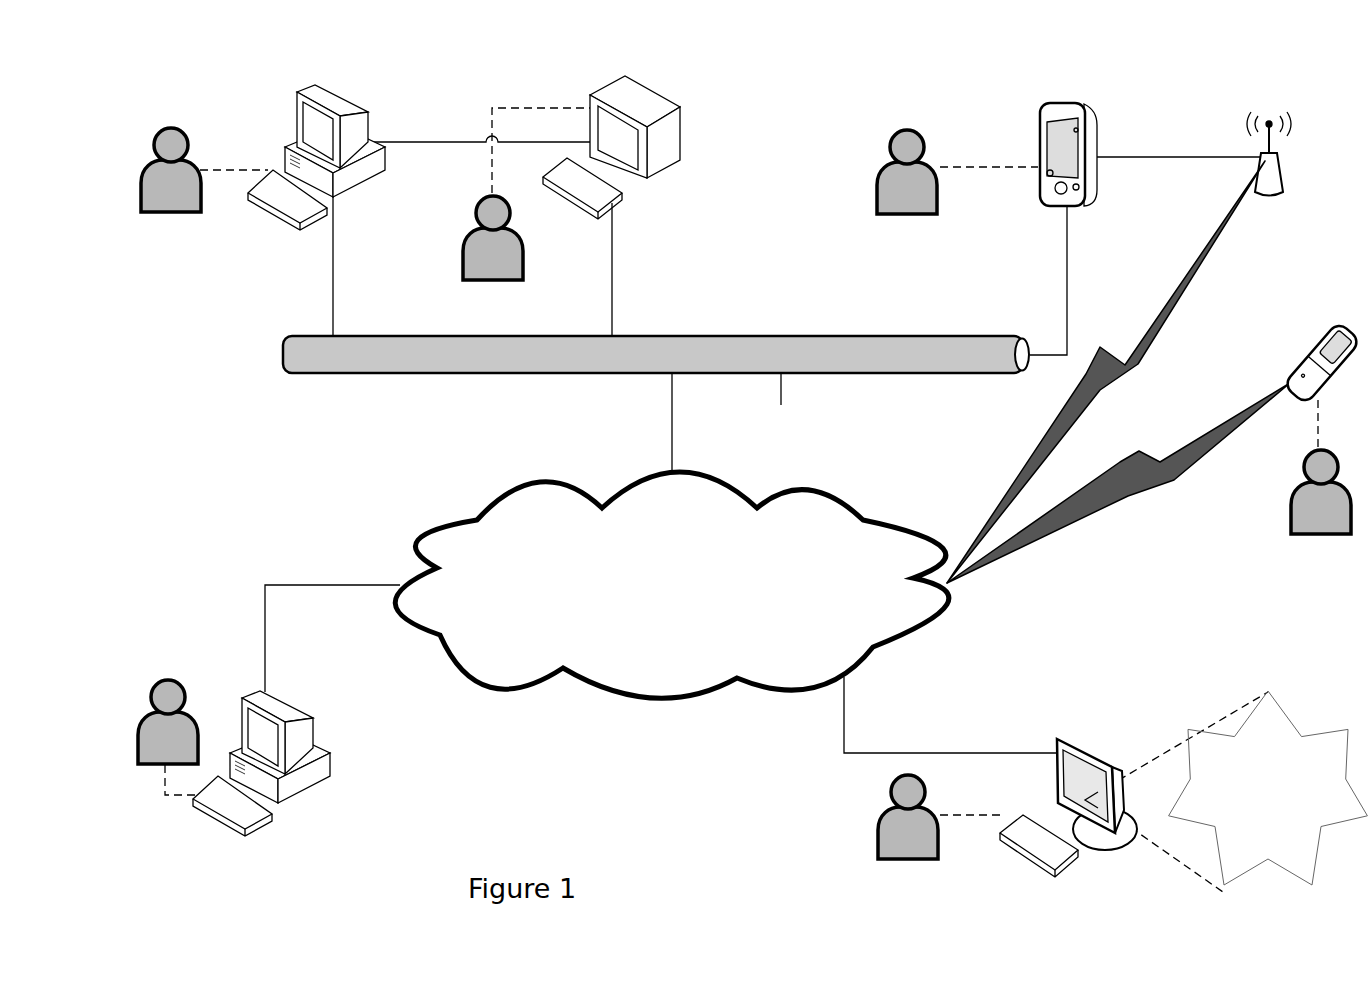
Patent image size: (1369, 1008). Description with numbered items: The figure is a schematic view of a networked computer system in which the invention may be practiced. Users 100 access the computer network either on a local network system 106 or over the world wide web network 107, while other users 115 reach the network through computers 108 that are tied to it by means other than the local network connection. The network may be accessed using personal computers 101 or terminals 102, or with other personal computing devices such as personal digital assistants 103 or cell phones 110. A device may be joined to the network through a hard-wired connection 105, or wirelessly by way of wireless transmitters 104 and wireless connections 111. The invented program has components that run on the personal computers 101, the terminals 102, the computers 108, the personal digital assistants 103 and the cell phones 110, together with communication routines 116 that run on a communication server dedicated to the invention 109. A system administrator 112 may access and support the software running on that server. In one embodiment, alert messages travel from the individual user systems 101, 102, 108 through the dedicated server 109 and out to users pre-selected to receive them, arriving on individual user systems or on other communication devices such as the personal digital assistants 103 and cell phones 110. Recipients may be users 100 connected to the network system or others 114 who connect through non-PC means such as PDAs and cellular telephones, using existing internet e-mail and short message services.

The users 100 is at (178, 215).
The personal computers 101 is at (333, 87).
The terminals 102 is at (645, 82).
The personal digital assistants 103 is at (1071, 100).
The wireless transmitters 104 is at (1262, 113).
The hard-wired connection 105 is at (618, 265).
The local network system 106 is at (420, 382).
The world wide web network 107 is at (490, 490).
The computers 108 is at (236, 694).
The communication server dedicated to the invention 109 is at (1119, 761).
The cell phones 110 is at (1331, 325).
The wireless connections 111 is at (1191, 437).
The system administrator 112 is at (874, 834).
The others 114 is at (913, 126).
The other users 115 is at (168, 680).
The communication routines 116 is at (1293, 718).